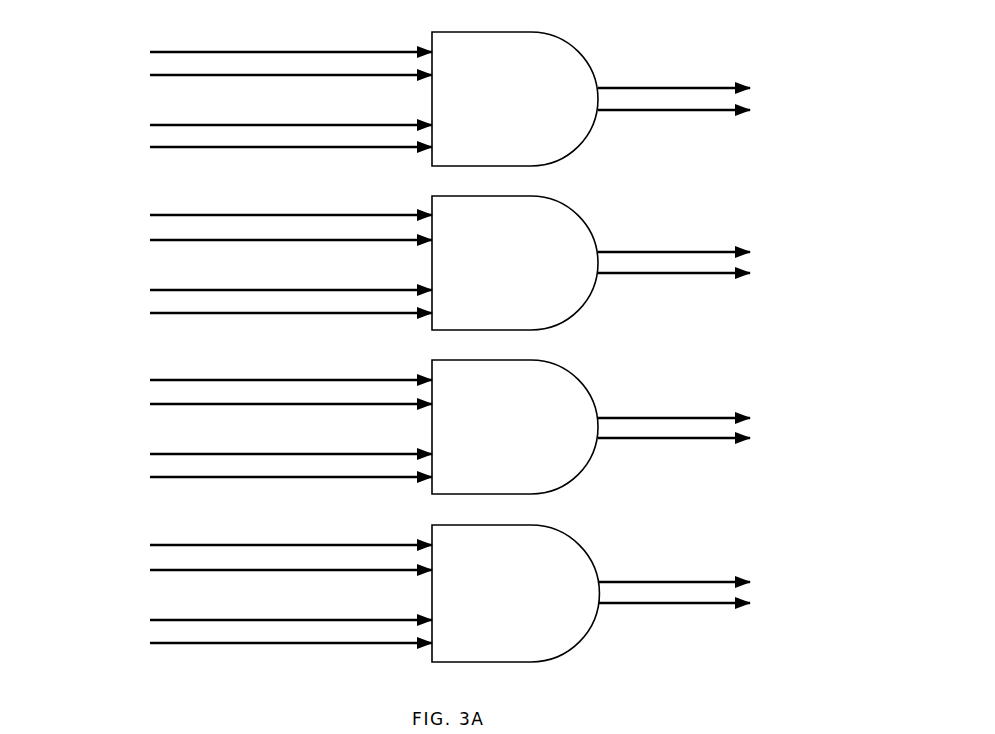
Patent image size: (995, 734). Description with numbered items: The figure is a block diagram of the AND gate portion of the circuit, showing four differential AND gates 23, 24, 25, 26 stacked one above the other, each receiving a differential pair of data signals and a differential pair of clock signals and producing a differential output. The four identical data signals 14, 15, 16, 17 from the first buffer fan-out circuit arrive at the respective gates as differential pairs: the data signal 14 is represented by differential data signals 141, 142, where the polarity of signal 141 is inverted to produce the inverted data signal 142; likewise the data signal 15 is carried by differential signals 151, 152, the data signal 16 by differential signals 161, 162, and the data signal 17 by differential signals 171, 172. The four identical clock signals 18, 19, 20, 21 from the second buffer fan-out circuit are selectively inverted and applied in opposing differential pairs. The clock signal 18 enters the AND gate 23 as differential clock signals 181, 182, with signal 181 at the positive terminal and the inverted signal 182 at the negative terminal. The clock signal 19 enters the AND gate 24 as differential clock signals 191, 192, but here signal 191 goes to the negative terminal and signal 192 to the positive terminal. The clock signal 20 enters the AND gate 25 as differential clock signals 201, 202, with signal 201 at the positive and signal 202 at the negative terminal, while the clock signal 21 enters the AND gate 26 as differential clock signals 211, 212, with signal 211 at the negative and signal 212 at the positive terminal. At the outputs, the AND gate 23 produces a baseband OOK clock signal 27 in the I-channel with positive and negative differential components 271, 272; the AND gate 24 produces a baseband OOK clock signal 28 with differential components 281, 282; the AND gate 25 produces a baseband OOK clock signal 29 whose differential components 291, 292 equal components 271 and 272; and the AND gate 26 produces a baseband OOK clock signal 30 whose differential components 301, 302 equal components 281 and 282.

The data signal 14 is at (128, 62).
The differential data signal 141 is at (342, 50).
The inverted data signal 142 is at (342, 73).
The clock signal 18 is at (128, 134).
The differential clock signal 181 is at (342, 123).
The differential clock signal 182 is at (342, 145).
The data signal 15 is at (128, 226).
The differential data signal 151 is at (342, 213).
The inverted data signal 152 is at (342, 238).
The clock signal 19 is at (128, 298).
The differential clock signal 191 is at (342, 311).
The differential clock signal 192 is at (342, 288).
The data signal 16 is at (128, 390).
The differential data signal 161 is at (342, 378).
The differential data signal 162 is at (342, 402).
The clock signal 20 is at (128, 462).
The differential clock signal 201 is at (342, 452).
The differential clock signal 202 is at (342, 475).
The data signal 17 is at (128, 555).
The differential data signal 171 is at (342, 543).
The differential data signal 172 is at (342, 568).
The clock signal 21 is at (128, 626).
The differential clock signal 211 is at (342, 641).
The differential clock signal 212 is at (342, 618).
The AND gate 23 is at (592, 47).
The AND gate 24 is at (566, 202).
The AND gate 25 is at (566, 366).
The AND gate 26 is at (566, 531).
The baseband OOK clock signal 27 is at (765, 95).
The differential component 271 is at (648, 86).
The differential component 272 is at (648, 112).
The baseband OOK clock signal 28 is at (764, 260).
The differential component 281 is at (648, 250).
The differential component 282 is at (648, 276).
The baseband OOK clock signal 29 is at (764, 424).
The differential component 291 is at (648, 414).
The differential component 292 is at (648, 441).
The baseband OOK clock signal 30 is at (764, 589).
The differential component 301 is at (648, 579).
The differential component 302 is at (648, 606).